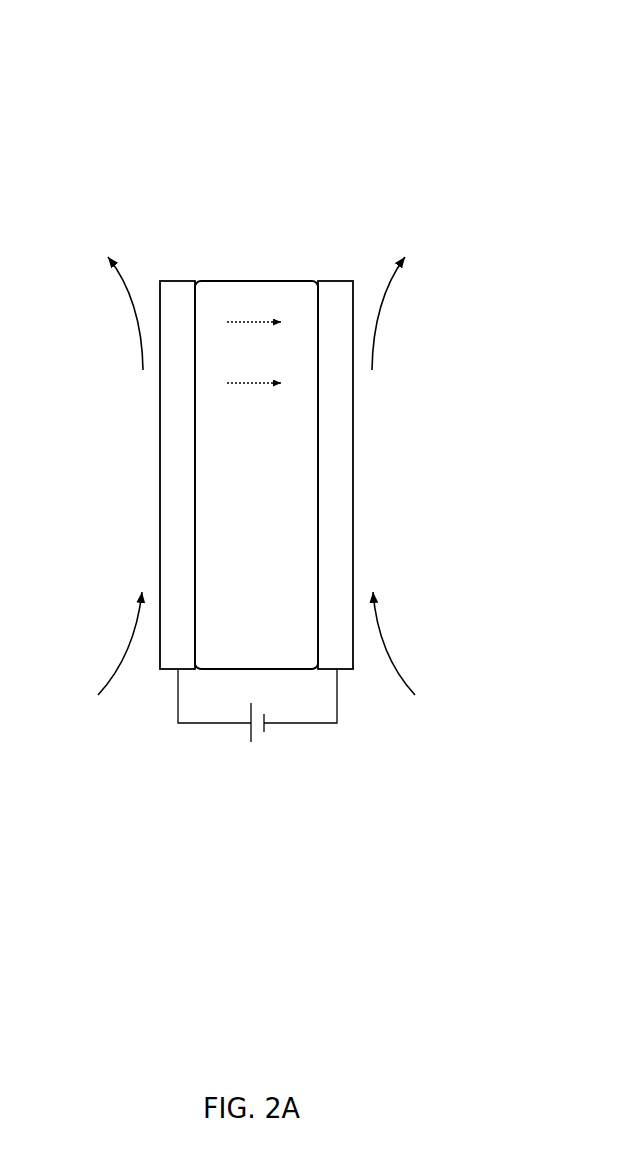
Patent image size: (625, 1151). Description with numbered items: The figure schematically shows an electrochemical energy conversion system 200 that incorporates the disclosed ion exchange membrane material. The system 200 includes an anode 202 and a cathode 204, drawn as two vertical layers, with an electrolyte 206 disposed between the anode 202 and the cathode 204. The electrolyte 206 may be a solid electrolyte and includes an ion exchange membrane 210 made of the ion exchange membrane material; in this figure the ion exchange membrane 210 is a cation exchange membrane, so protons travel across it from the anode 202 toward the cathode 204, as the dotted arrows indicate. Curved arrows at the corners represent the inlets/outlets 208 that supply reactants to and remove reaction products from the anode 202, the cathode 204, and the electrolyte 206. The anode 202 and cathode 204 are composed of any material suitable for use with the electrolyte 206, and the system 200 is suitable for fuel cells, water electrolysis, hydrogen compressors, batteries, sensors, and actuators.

The electrochemical energy conversion system 200 is at (173, 98).
The anode 202 is at (175, 281).
The cathode 204 is at (337, 281).
The electrolyte 206 is at (280, 487).
The inlets/outlets 208 is at (140, 333).
The ion exchange membrane 210 is at (257, 281).